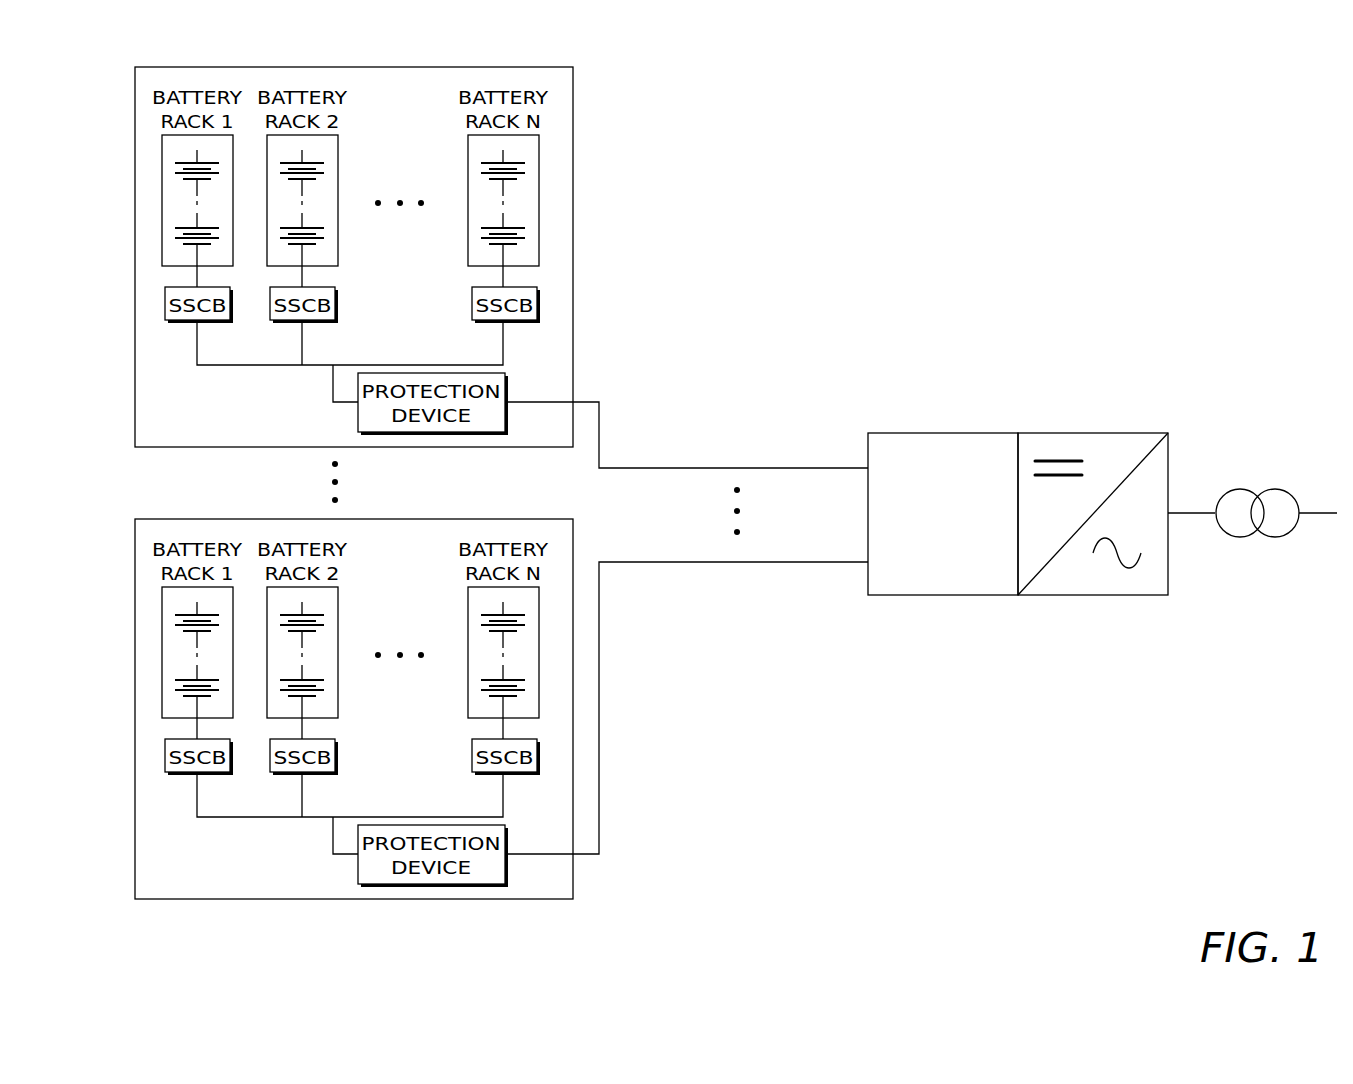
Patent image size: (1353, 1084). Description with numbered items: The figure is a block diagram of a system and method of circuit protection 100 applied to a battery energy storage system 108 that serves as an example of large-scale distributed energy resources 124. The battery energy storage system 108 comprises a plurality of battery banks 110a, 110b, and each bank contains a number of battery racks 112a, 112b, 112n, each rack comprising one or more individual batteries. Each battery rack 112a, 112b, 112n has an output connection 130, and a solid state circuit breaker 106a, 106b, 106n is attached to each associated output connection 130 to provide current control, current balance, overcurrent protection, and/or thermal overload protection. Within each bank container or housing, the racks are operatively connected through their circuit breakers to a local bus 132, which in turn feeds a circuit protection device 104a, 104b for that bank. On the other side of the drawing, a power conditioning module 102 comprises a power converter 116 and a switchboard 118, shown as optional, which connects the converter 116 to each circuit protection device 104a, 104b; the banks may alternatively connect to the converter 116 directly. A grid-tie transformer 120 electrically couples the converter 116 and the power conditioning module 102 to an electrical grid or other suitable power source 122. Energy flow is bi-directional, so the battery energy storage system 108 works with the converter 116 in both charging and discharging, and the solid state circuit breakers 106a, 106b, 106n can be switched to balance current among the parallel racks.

The system and method of circuit protection 100 is at (1221, 100).
The power conditioning module 102 is at (1207, 341).
The circuit protection device 104a is at (510, 432).
The circuit protection device 104b is at (510, 868).
The solid state circuit breaker 106a is at (165, 300).
The solid state circuit breaker 106b is at (270, 316).
The solid state circuit breaker 106n is at (540, 300).
The battery energy storage system 108 is at (676, 714).
The battery bank 110a is at (245, 436).
The battery bank 110b is at (240, 880).
The battery rack 112a is at (162, 190).
The battery rack 112b is at (340, 165).
The battery rack 112n is at (540, 160).
The power converter 116 is at (1087, 583).
The switchboard 118 is at (907, 445).
The transformer 120 is at (1237, 537).
The electrical grid 122 is at (1300, 505).
The distributed energy resources 124 is at (630, 285).
The output connection 130 is at (197, 280).
The local bus 132 is at (345, 365).